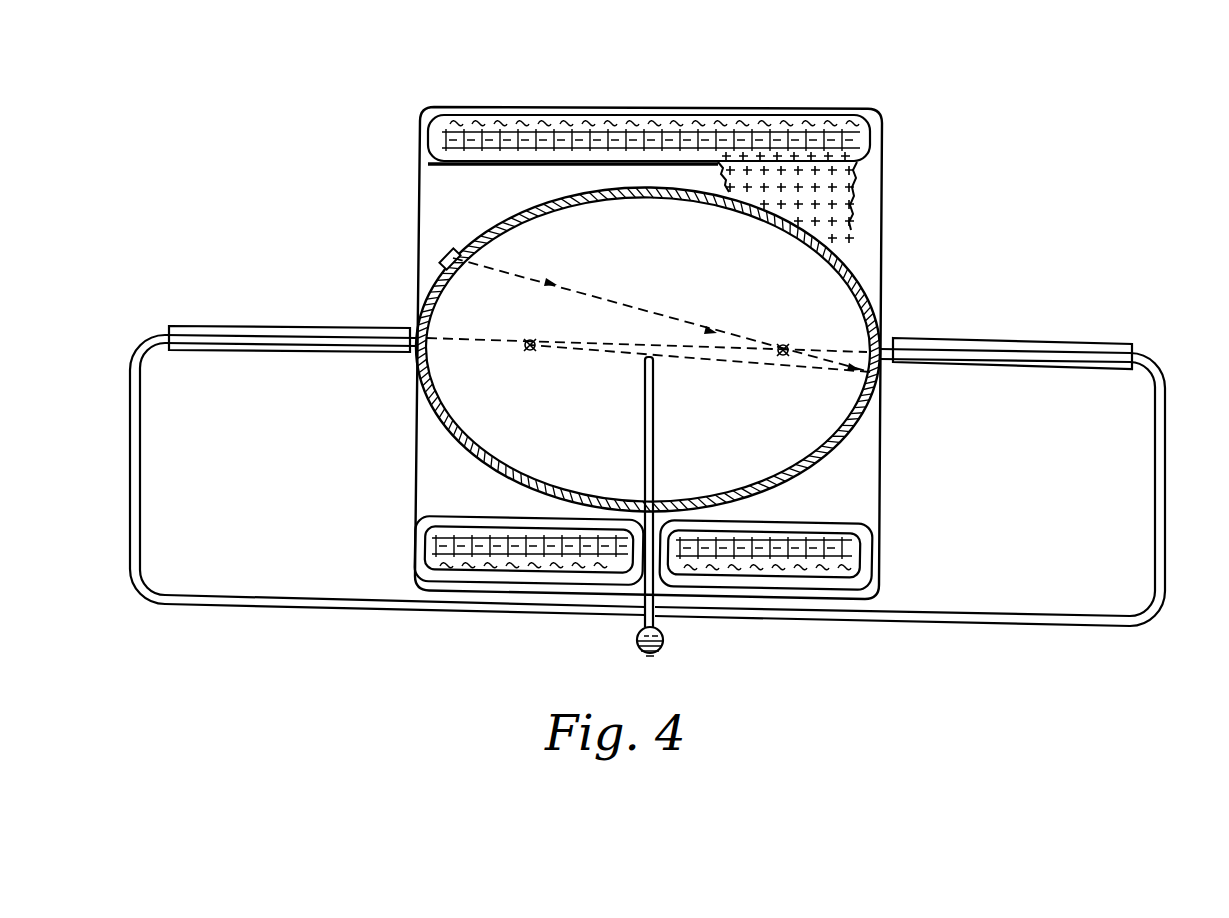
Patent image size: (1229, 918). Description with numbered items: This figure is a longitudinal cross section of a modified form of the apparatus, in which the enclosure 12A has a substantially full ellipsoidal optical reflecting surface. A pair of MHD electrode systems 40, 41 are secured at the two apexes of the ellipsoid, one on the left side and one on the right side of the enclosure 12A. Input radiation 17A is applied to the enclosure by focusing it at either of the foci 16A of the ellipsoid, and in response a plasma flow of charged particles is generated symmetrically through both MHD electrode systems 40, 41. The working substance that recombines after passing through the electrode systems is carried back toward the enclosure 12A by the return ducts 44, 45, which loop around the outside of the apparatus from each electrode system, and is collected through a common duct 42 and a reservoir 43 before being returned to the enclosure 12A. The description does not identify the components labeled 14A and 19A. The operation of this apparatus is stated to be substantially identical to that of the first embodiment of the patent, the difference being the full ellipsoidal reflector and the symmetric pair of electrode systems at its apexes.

The enclosure 12A is at (540, 244).
The light source 14A is at (443, 260).
The foci 16A is at (782, 340).
The input radiation 17A is at (585, 292).
The heat absorbing mesh 19A is at (662, 150).
The MHD electrode system 40 is at (1005, 338).
The MHD electrode system 41 is at (236, 326).
The common duct 42 is at (657, 445).
The reservoir 43 is at (664, 650).
The return duct 44 is at (130, 474).
The return duct 45 is at (1166, 486).